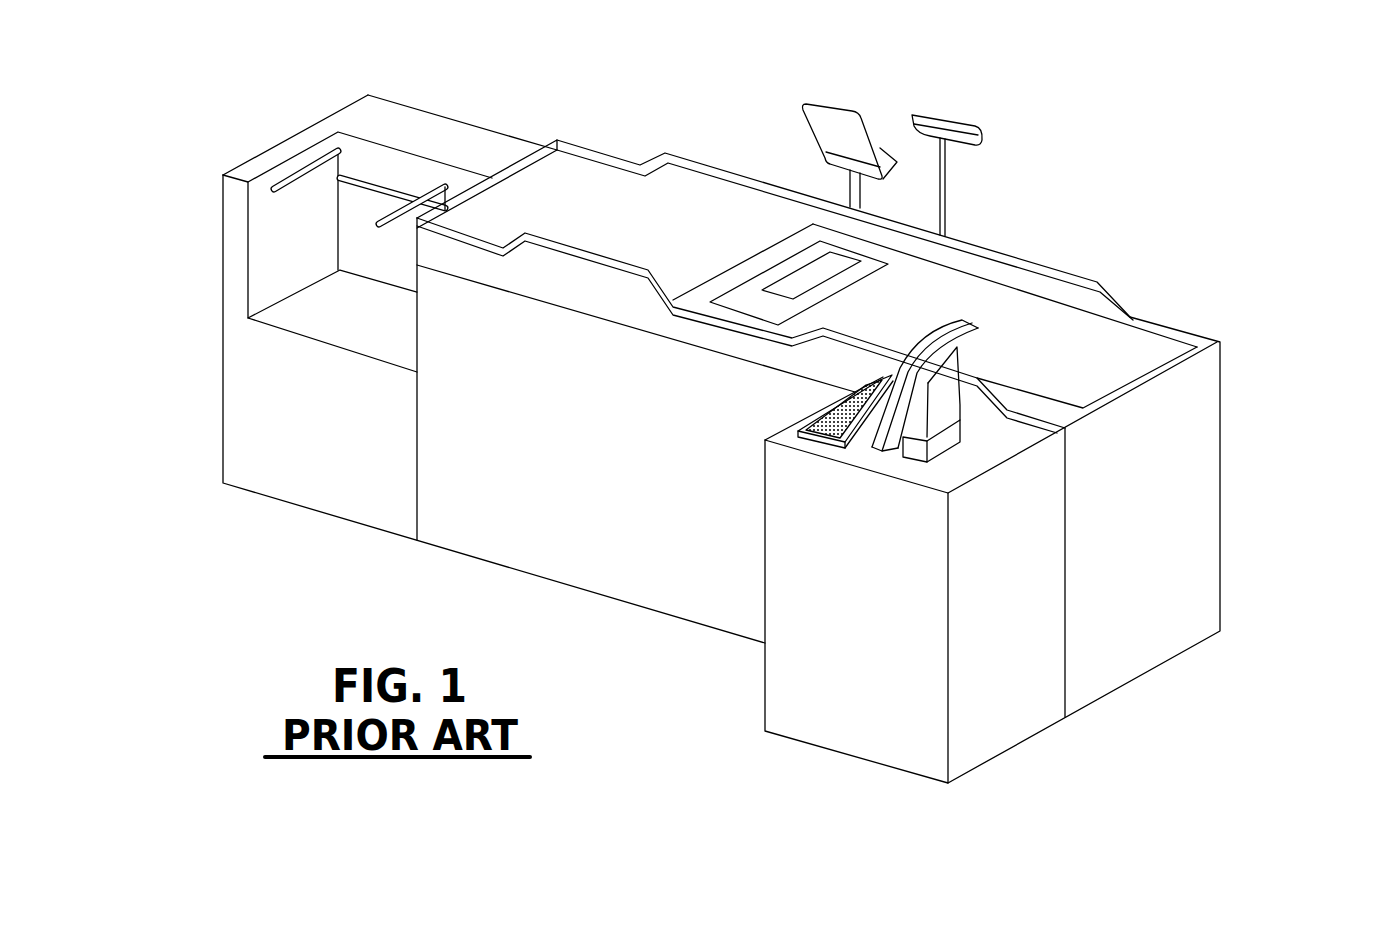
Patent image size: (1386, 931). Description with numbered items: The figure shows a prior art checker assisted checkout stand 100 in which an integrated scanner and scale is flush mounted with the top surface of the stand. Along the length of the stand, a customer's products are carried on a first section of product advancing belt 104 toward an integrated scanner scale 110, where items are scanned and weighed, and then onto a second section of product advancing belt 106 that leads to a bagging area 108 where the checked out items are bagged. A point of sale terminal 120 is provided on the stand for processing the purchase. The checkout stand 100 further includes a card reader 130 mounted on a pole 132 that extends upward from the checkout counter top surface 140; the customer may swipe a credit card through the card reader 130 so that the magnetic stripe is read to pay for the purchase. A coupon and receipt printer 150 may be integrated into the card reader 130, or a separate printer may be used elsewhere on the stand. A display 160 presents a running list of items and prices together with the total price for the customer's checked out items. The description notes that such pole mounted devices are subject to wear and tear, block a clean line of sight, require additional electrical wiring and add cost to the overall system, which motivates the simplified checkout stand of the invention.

The checkout stand 100 is at (1270, 84).
The first section of product advancing belt 104 is at (1042, 318).
The second section of product advancing belt 106 is at (585, 197).
The bagging area 108 is at (278, 258).
The integrated scanner scale 110 is at (790, 283).
The point of sale terminal 120 is at (972, 343).
The card reader 130 is at (838, 122).
The pole 132 is at (845, 195).
The checkout counter top surface 140 is at (918, 252).
The coupon and receipt printer 150 is at (885, 148).
The display 160 is at (977, 127).